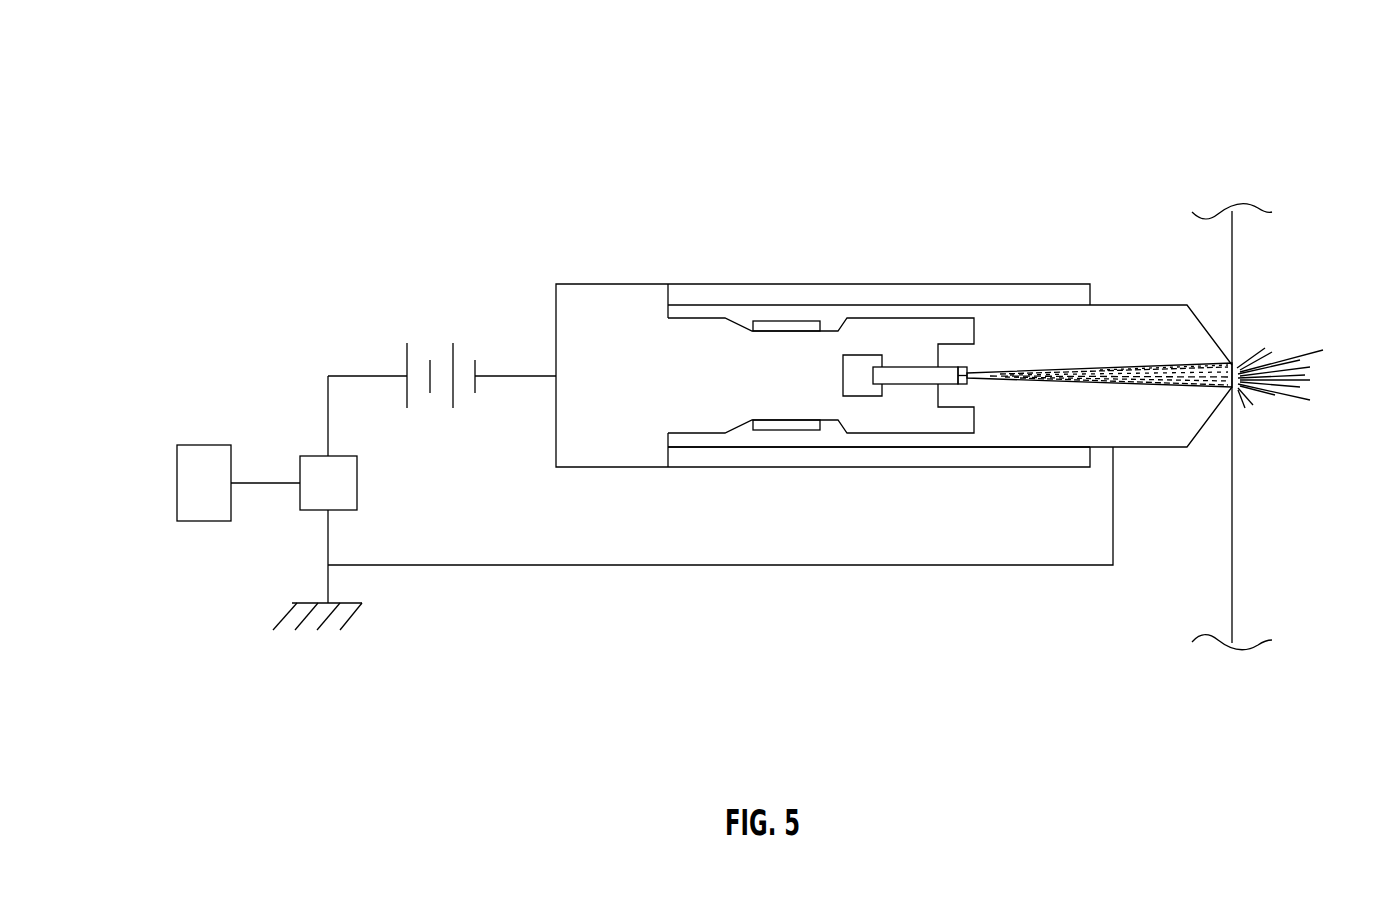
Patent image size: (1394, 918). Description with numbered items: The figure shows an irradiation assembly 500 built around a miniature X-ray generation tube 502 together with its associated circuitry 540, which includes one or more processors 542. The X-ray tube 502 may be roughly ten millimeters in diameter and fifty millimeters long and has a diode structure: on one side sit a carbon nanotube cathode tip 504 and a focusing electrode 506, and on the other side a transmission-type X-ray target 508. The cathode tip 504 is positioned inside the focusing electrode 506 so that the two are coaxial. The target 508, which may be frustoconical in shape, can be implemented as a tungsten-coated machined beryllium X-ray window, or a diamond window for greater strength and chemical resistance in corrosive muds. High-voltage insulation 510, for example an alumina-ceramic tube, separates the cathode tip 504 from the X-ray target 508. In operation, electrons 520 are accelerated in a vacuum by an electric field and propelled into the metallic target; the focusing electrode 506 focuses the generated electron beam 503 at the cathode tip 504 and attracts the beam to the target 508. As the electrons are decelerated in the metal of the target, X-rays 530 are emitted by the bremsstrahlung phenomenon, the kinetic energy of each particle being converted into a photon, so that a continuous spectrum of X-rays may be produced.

The irradiation assembly 500 is at (243, 92).
The X-ray generation tube 502 is at (583, 283).
The electron beam 503 is at (1140, 408).
The carbon nanotube cathode tip 504 is at (962, 367).
The focusing electrode 506 is at (962, 329).
The transmission-type X-ray target 508 is at (1234, 363).
The high-voltage insulation 510 is at (812, 462).
The electrons 520 is at (1078, 390).
The X-rays 530 is at (1307, 383).
The circuitry 540 is at (279, 383).
The processor 542 is at (187, 444).